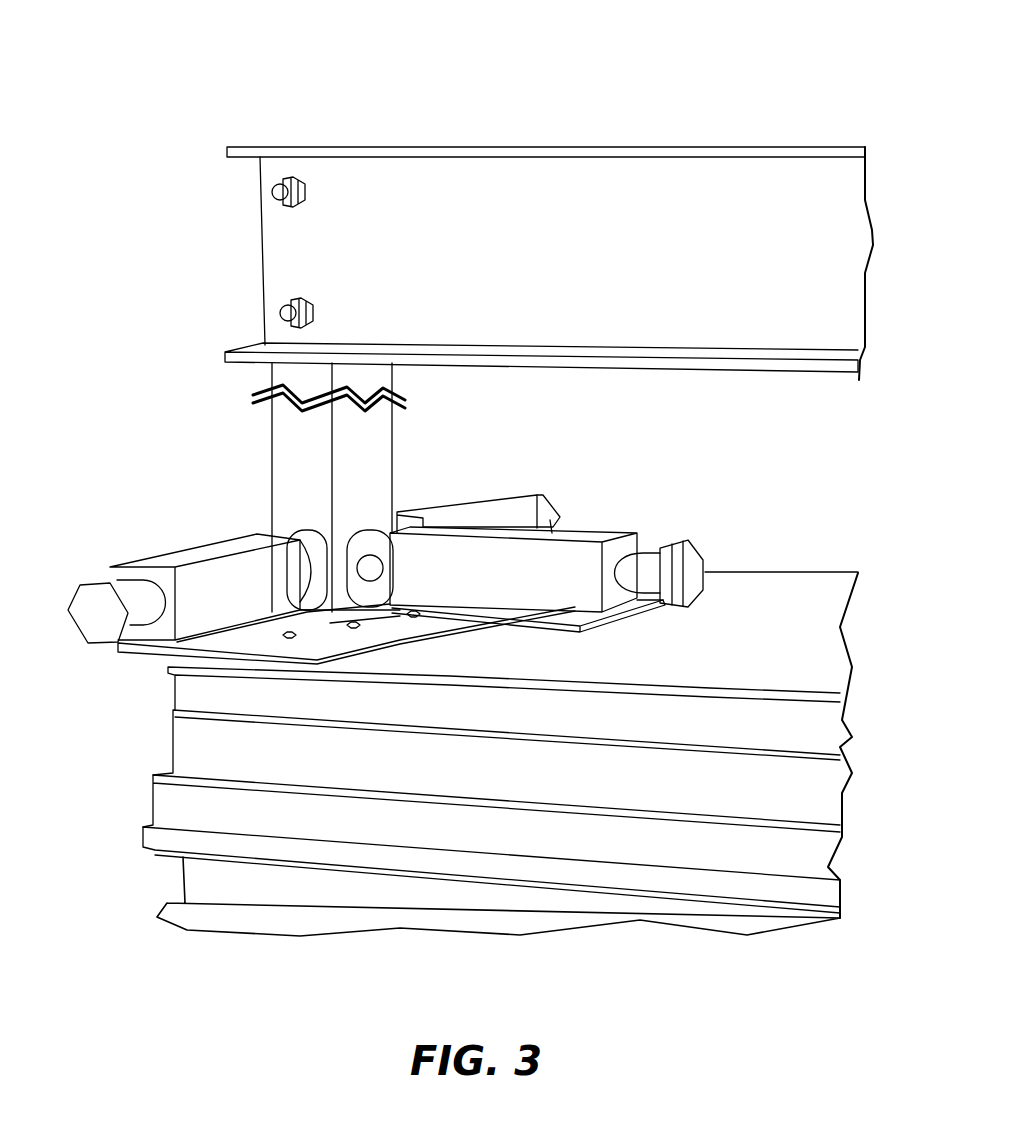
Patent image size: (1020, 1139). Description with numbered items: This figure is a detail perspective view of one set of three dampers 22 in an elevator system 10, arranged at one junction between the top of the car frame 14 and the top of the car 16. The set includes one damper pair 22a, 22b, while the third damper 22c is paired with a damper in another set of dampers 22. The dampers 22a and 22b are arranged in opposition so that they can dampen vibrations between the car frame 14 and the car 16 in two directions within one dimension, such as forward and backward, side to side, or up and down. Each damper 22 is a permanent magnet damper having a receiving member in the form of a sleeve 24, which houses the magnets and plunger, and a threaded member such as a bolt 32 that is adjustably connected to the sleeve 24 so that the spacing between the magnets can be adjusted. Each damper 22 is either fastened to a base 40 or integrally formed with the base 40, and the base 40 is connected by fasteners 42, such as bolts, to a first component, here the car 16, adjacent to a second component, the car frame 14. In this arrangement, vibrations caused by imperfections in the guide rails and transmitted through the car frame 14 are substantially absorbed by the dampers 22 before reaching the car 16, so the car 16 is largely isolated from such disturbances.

The elevator system 10 is at (503, 121).
The car frame 14 is at (620, 212).
The car 16 is at (317, 845).
The dampers 22 is at (410, 497).
The damper 22a is at (217, 562).
The damper 22b is at (447, 507).
The damper 22c is at (598, 533).
The sleeve 24 is at (153, 560).
The bolt 32 is at (82, 593).
The base 40 is at (333, 638).
The fasteners 42 is at (363, 622).